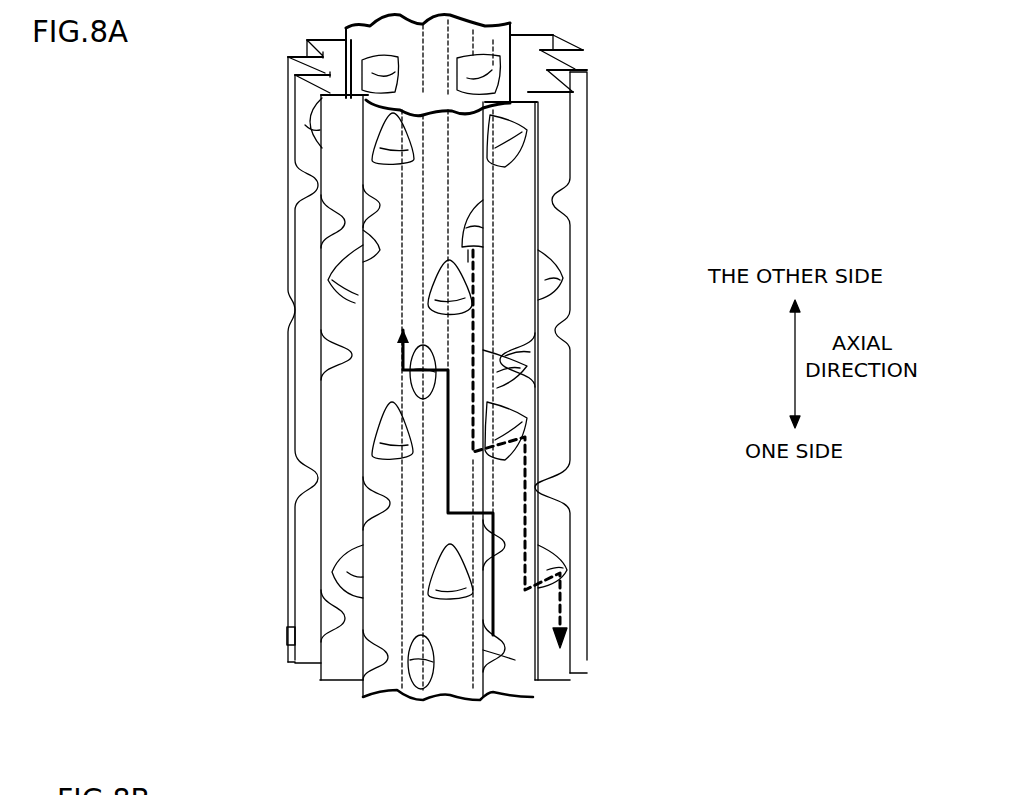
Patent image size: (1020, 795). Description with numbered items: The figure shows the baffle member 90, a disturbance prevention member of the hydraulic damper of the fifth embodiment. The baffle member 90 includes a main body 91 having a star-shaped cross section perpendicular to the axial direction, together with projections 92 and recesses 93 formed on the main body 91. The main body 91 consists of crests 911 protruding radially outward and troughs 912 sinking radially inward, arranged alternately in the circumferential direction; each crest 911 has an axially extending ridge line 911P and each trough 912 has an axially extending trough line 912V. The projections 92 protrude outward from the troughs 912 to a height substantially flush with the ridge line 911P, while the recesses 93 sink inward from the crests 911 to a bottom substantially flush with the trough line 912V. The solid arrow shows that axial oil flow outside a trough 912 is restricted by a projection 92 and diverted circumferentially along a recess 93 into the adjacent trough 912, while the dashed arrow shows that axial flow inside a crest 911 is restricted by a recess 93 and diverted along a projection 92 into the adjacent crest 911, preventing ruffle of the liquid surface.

The baffle member 90 is at (450, 404).
The main body 91 is at (437, 357).
The projection 92 is at (447, 326).
The recess 93 is at (428, 442).
The crest 911 is at (480, 712).
The trough 912 is at (440, 705).
The ridge line 911P is at (573, 602).
The trough line 912V is at (431, 272).